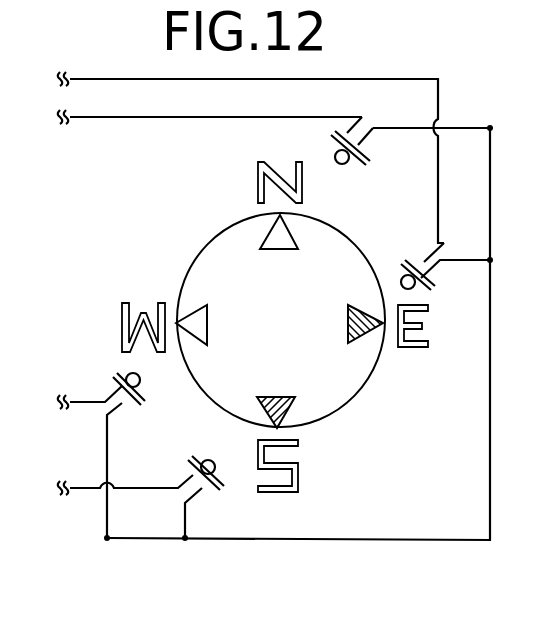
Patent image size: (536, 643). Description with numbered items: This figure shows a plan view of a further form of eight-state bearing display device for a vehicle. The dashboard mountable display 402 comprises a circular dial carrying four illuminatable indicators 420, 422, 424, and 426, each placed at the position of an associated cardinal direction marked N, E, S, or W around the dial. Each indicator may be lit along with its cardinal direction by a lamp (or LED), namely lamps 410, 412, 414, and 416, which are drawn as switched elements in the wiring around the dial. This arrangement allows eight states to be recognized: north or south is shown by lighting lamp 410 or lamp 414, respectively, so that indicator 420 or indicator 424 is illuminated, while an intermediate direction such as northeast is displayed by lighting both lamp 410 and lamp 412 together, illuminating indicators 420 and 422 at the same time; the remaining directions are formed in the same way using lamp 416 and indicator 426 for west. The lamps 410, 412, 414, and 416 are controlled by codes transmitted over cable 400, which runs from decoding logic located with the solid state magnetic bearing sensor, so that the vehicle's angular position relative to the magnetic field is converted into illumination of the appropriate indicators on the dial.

The cable 400 is at (128, 176).
The dashboard mountable display 402 is at (232, 225).
The lamp 410 is at (366, 160).
The lamp 412 is at (434, 288).
The lamp 414 is at (222, 490).
The lamp 416 is at (145, 400).
The illuminatable indicator 420 is at (289, 231).
The illuminatable indicator 422 is at (377, 328).
The illuminatable indicator 424 is at (291, 403).
The illuminatable indicator 426 is at (183, 286).